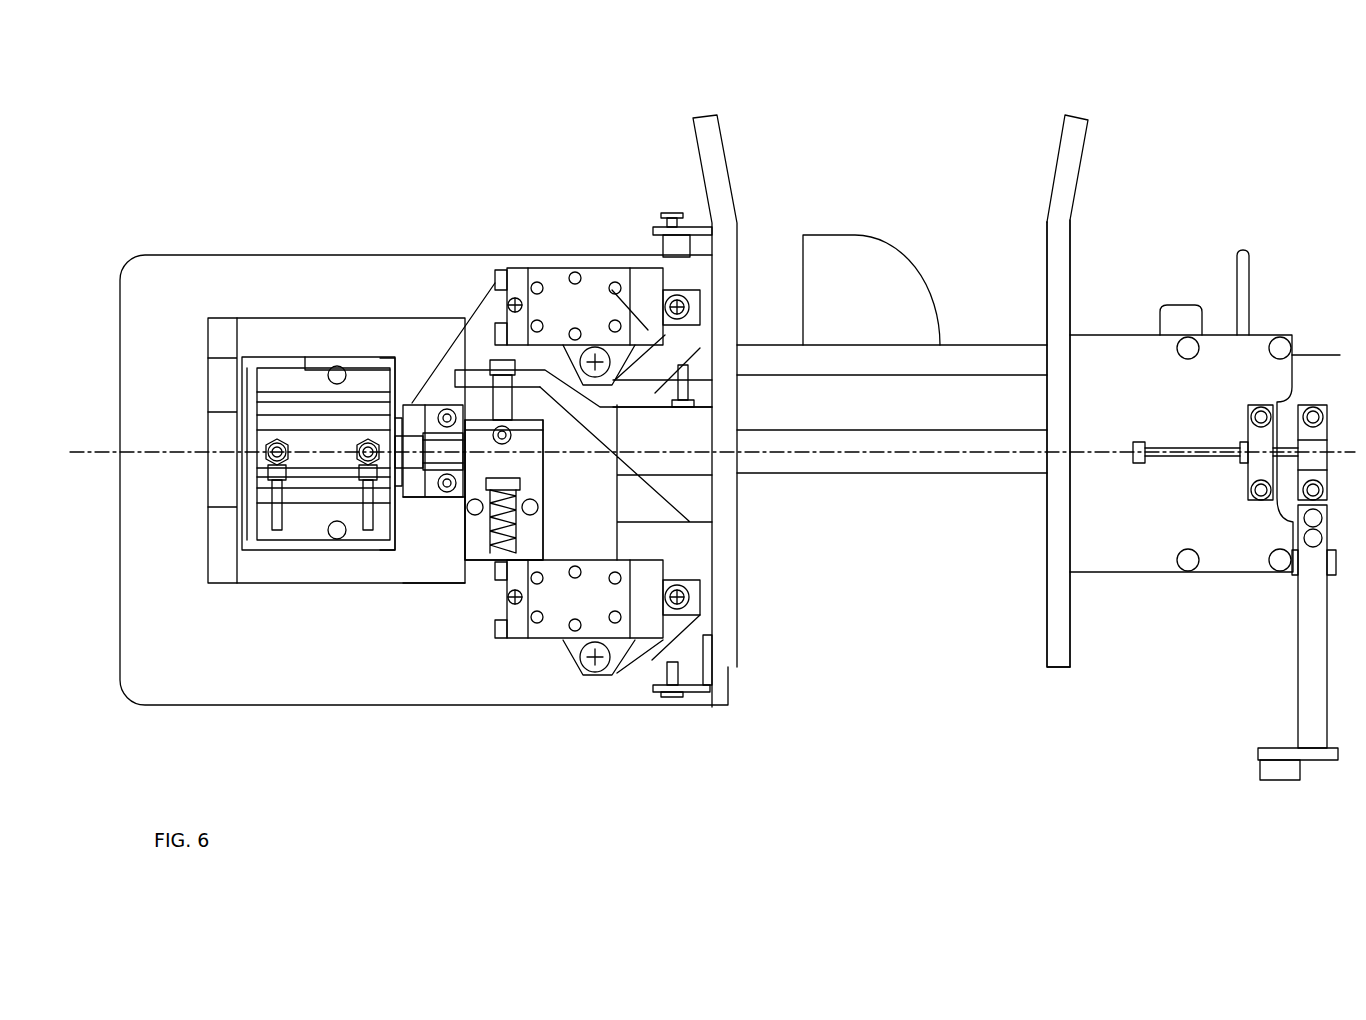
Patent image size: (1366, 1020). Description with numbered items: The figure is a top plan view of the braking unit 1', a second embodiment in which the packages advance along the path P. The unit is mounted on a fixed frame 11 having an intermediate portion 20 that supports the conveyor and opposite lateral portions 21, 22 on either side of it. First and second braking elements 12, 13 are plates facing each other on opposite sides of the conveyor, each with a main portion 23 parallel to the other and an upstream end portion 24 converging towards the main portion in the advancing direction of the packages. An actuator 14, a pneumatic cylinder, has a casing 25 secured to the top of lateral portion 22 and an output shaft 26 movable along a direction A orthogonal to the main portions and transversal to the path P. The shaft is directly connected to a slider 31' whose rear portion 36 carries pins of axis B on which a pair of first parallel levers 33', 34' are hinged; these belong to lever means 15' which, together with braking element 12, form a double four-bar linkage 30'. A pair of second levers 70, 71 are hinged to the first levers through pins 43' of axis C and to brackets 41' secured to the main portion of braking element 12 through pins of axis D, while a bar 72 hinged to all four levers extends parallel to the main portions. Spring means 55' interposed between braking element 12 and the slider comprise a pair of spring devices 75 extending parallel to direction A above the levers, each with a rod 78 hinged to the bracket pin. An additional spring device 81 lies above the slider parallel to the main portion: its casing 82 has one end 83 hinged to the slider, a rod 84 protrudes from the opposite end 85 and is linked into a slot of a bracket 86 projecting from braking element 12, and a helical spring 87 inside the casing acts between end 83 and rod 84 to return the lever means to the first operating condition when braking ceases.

The braking unit 1' is at (196, 134).
The fixed frame 11 is at (1132, 540).
The first braking element 12 is at (757, 603).
The second braking element 13 is at (1060, 640).
The actuator 14 is at (287, 398).
The lever means 15' is at (795, 326).
The intermediate portion 20 is at (943, 468).
The lateral portion 21 is at (1113, 365).
The lateral portion 22 is at (218, 670).
The main portion 23 is at (1070, 300).
The upstream end portion 24 is at (720, 165).
The casing 25 is at (300, 500).
The output shaft 26 is at (413, 448).
The double four-bar linkage 30' is at (626, 464).
The slider 31' is at (430, 324).
The first lever 33' is at (562, 271).
The first lever 34' is at (560, 653).
The rear portion 36 is at (455, 368).
The bracket 41' is at (744, 433).
The pin 43' is at (574, 490).
The spring means 55' is at (444, 666).
The second lever 70 is at (663, 330).
The second lever 71 is at (632, 655).
The bar 72 is at (712, 515).
The spring device 75 is at (630, 356).
The rod 78 is at (680, 300).
The additional spring device 81 is at (447, 488).
The casing 82 is at (475, 542).
The end 83 is at (490, 634).
The rod 84 is at (480, 420).
The end 85 is at (530, 443).
The bracket 86 is at (700, 470).
The helical spring 87 is at (545, 512).
The direction A is at (160, 455).
The axis B is at (500, 252).
The axis C is at (593, 355).
The axis D is at (690, 250).
The path P is at (888, 113).